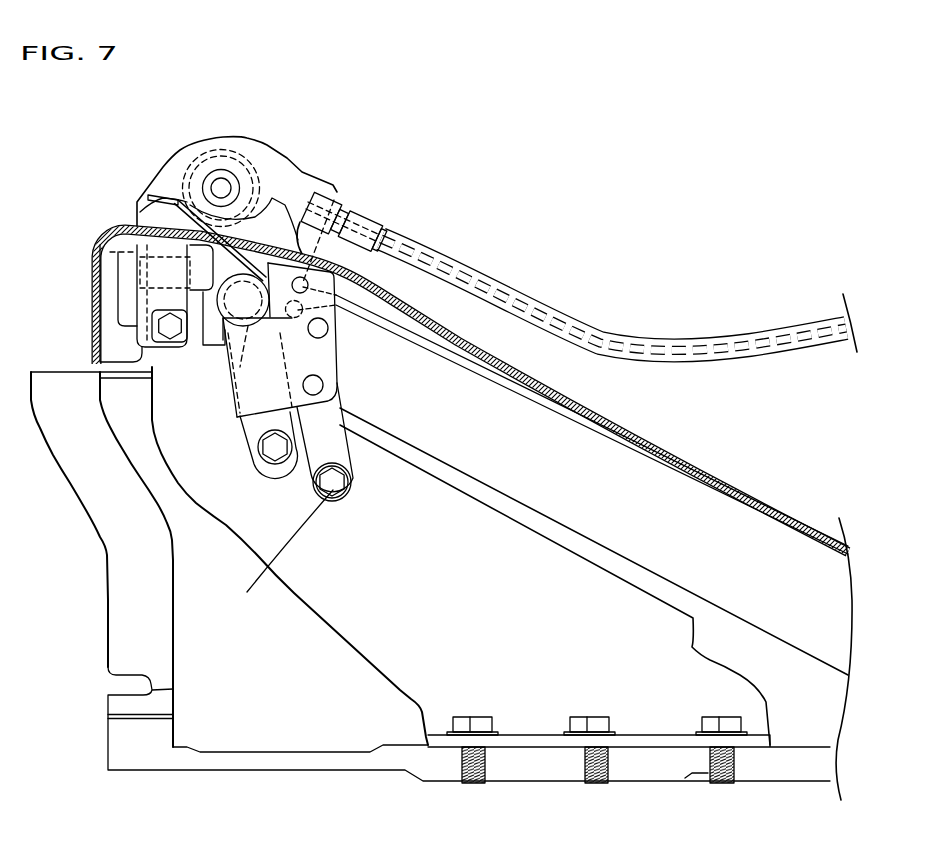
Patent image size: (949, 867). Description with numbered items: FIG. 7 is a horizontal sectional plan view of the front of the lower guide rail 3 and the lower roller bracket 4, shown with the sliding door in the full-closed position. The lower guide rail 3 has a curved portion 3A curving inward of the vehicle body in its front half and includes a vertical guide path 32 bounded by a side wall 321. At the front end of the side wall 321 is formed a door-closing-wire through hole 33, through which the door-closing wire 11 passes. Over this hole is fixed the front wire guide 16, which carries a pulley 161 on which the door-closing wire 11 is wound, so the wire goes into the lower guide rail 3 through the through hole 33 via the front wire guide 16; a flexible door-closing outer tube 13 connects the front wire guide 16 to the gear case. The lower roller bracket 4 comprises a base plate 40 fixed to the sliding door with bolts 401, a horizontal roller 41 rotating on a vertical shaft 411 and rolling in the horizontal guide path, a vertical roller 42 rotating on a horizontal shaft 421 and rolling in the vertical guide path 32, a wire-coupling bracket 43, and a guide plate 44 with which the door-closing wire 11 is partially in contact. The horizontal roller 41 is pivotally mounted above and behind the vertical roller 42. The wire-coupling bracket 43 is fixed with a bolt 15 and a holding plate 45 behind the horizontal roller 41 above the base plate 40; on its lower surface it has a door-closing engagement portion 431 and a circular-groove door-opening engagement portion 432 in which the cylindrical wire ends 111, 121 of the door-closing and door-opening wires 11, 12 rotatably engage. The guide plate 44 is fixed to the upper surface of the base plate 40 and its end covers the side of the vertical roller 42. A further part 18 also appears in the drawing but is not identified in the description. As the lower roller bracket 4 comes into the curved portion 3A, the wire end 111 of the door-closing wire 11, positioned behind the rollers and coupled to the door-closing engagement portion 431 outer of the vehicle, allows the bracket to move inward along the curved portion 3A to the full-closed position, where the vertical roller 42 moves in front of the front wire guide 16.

The lower guide rail 3 is at (475, 515).
The curved portion 3A is at (530, 515).
The lower roller bracket 4 is at (430, 592).
The door-closing wire 11 is at (178, 201).
The door-opening wire 12 is at (577, 416).
The door-closing outer tube 13 is at (769, 326).
The bolt 15 is at (279, 553).
The front wire guide 16 is at (198, 193).
The fastening bolt 18 is at (152, 325).
The vertical guide path 32 is at (652, 505).
The door-closing-wire through hole 33 is at (303, 277).
The base plate 40 is at (308, 598).
The horizontal roller 41 is at (236, 345).
The vertical roller 42 is at (126, 296).
The wire-coupling bracket 43 is at (324, 321).
The guide plate 44 is at (140, 290).
The holding plate 45 is at (233, 420).
The wire end 111 is at (349, 339).
The wire end 121 is at (375, 213).
The pulley 161 is at (195, 160).
The side wall 321 is at (706, 480).
The bolts 401 is at (583, 765).
The vertical shaft 411 is at (214, 335).
The horizontal shaft 421 is at (110, 252).
The door-closing engagement portion 431 is at (305, 312).
The door-opening engagement portion 432 is at (348, 210).